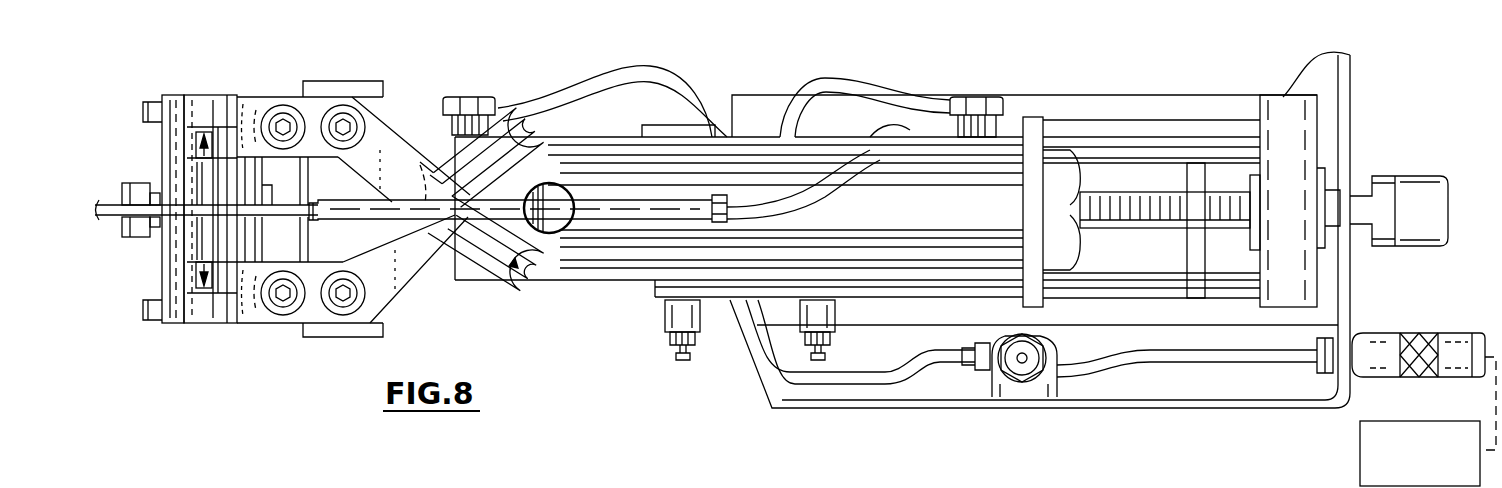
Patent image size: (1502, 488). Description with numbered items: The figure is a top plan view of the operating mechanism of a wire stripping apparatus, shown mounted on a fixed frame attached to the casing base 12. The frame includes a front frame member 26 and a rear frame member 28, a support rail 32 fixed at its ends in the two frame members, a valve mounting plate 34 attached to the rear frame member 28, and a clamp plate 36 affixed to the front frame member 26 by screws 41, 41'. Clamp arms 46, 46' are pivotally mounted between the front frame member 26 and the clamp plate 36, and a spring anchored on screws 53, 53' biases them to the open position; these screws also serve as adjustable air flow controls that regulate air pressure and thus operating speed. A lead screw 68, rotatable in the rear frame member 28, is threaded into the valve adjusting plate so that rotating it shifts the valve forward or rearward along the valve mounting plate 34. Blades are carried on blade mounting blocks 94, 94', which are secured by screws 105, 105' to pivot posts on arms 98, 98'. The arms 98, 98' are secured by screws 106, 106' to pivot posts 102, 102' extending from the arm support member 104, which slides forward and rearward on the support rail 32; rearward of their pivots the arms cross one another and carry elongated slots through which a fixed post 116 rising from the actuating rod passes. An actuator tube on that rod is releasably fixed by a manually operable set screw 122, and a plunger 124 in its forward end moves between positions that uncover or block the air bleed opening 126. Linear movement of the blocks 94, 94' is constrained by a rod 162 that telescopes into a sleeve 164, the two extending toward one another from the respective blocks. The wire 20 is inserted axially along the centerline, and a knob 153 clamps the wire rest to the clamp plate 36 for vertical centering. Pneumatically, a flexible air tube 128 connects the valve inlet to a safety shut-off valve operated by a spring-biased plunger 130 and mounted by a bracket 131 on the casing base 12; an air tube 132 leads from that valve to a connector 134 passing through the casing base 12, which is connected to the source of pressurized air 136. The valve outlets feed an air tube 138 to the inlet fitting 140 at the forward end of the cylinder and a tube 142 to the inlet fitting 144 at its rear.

The casing base 12 is at (1108, 400).
The wire 20 is at (120, 205).
The front frame member 26 is at (218, 104).
The rear frame member 28 is at (1284, 104).
The support rail 32 is at (572, 284).
The valve mounting plate 34 is at (1249, 146).
The clamp plate 36 is at (186, 98).
The screw 41 is at (143, 90).
The screw 41' is at (130, 323).
The clamp arm 46 is at (152, 159).
The clamp arm 46' is at (150, 246).
The adjustable air flow control 53 is at (700, 336).
The adjustable air flow control 53' is at (837, 336).
The lead screw 68 is at (1118, 226).
The blade mounting block 94 is at (310, 95).
The blade mounting block 94' is at (310, 317).
The arm 98 is at (404, 142).
The arm 98' is at (405, 273).
The pivot post 102 is at (486, 266).
The pivot post 102' is at (521, 155).
The arm support member 104 is at (385, 88).
The screw 105 is at (297, 96).
The screw 105' is at (263, 315).
The screw 106 is at (360, 90).
The screw 106' is at (343, 317).
The fixed post 116 is at (424, 195).
The set screw 122 is at (567, 236).
The plunger 124 is at (312, 222).
The air bleed opening 126 is at (352, 205).
The flexible air tube 128 is at (885, 388).
The plunger 130 is at (1028, 358).
The bracket 131 is at (1004, 388).
The air tube 132 is at (1170, 356).
The connector 134 is at (1378, 370).
The source of pressurized air 136 is at (1360, 452).
The air tube 138 is at (632, 74).
The inlet fitting 140 is at (470, 106).
The tube 142 is at (858, 86).
The inlet fitting 144 is at (978, 108).
The knob 153 is at (137, 186).
The rod 162 is at (268, 205).
The sleeve 164 is at (264, 228).